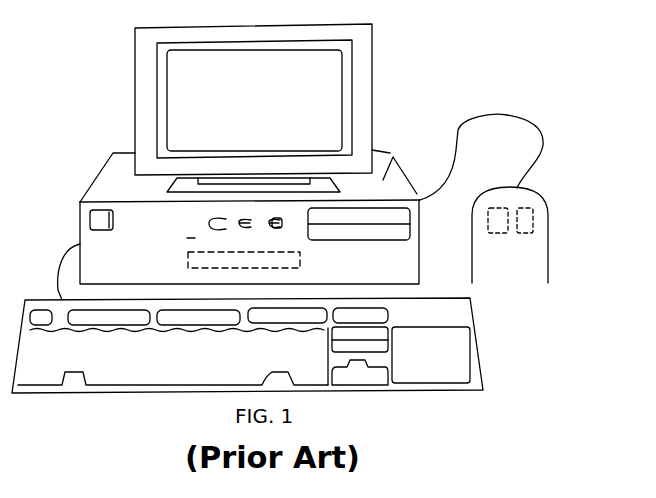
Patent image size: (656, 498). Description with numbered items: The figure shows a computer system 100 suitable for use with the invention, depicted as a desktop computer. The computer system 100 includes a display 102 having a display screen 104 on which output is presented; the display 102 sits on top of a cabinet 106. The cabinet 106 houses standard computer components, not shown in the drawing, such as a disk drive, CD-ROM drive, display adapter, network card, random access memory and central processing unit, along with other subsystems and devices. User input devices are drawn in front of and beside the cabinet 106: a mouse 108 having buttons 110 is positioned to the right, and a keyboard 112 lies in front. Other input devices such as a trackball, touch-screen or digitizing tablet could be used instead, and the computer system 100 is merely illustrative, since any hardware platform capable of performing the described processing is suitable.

The computer system 100 is at (503, 41).
The display 102 is at (297, 108).
The display screen 104 is at (323, 90).
The cabinet 106 is at (395, 154).
The mouse 108 is at (558, 217).
The buttons 110 is at (500, 205).
The keyboard 112 is at (130, 397).